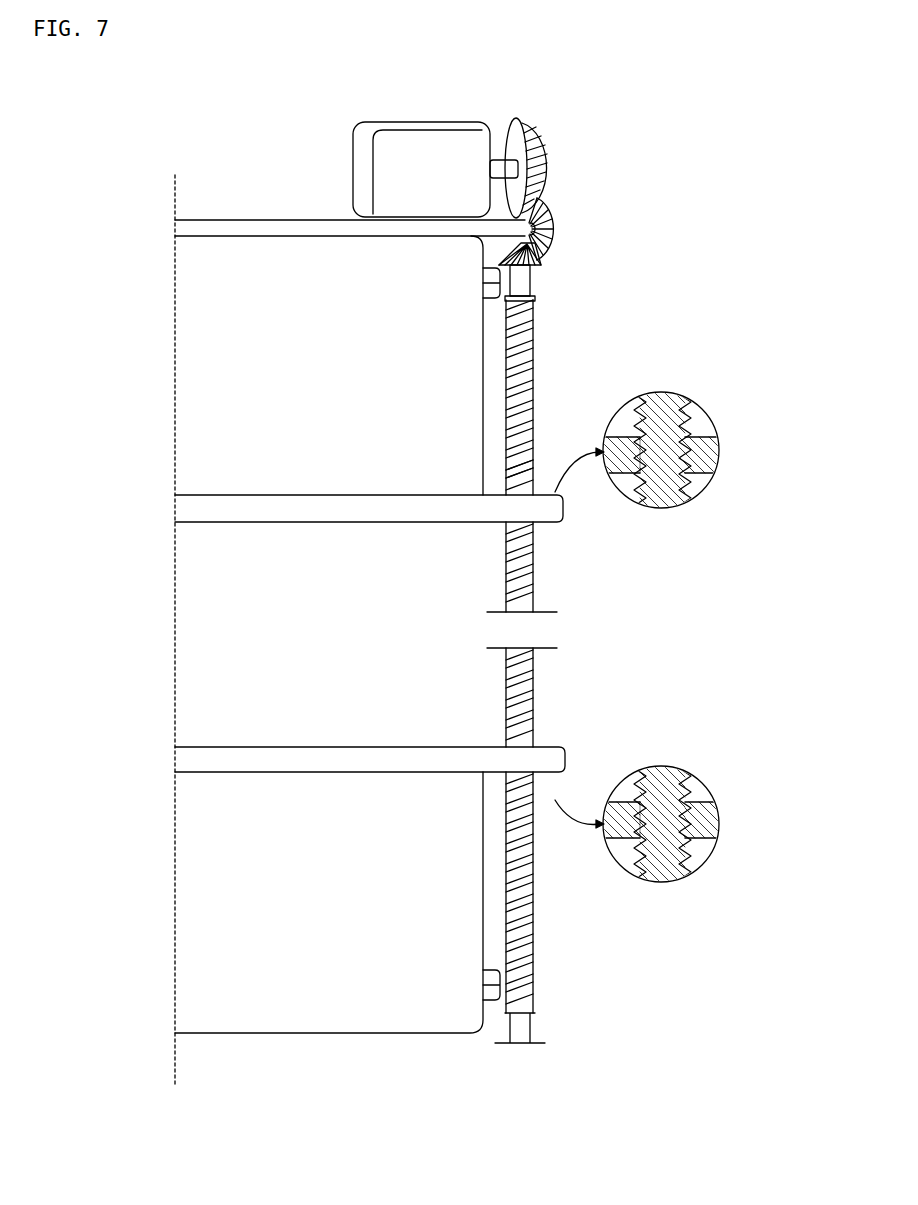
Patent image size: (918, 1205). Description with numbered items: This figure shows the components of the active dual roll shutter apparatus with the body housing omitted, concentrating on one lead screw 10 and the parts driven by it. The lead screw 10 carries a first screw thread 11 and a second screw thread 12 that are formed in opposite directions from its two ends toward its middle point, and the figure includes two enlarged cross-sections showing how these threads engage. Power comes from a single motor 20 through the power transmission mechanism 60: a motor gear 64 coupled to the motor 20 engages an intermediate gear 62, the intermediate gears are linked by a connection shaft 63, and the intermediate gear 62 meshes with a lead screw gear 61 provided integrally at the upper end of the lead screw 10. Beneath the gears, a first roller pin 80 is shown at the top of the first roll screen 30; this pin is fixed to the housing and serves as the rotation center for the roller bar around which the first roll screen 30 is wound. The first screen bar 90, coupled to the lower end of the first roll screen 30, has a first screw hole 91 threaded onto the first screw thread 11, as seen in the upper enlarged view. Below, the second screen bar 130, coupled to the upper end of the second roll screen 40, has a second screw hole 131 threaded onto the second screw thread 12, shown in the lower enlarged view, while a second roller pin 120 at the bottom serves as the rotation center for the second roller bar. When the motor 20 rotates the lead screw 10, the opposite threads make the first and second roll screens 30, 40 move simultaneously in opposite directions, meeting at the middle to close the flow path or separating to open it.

The motor 20 is at (421, 155).
The power transmission mechanism 60 is at (559, 178).
The motor gear 64 is at (537, 140).
The intermediate gear 62 is at (553, 218).
The lead screw gear 61 is at (545, 258).
The connection shaft 63 is at (252, 228).
The first roller pin 80 is at (500, 283).
The lead screw 10 is at (537, 350).
The first screw thread 11 is at (531, 375).
The first roll screen 30 is at (210, 378).
The first screen bar 90 is at (418, 512).
The first screw hole 91 is at (672, 478).
The second screen bar 130 is at (420, 816).
The second screw hole 131 is at (672, 855).
The second screw thread 12 is at (531, 935).
The second roller pin 120 is at (500, 987).
The second roll screen 40 is at (210, 890).